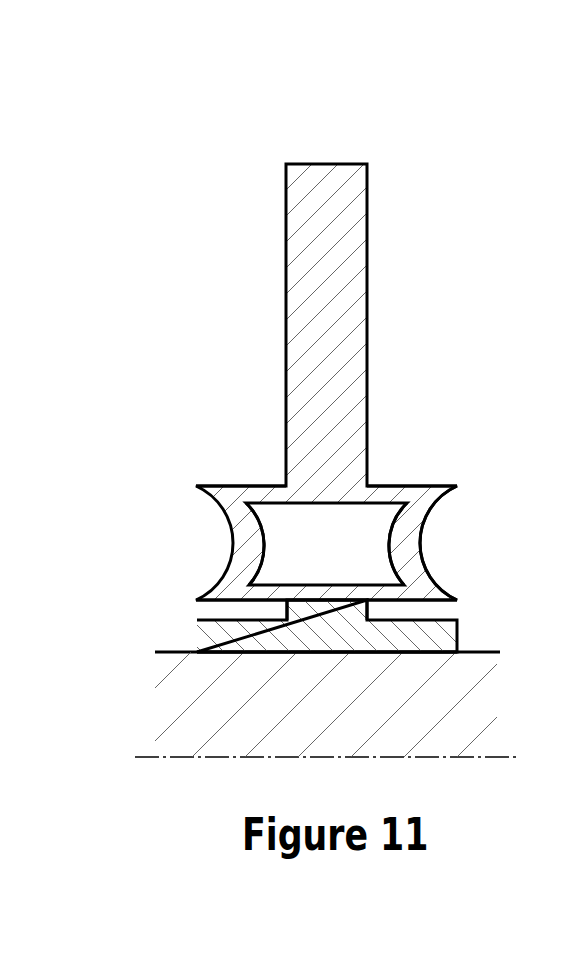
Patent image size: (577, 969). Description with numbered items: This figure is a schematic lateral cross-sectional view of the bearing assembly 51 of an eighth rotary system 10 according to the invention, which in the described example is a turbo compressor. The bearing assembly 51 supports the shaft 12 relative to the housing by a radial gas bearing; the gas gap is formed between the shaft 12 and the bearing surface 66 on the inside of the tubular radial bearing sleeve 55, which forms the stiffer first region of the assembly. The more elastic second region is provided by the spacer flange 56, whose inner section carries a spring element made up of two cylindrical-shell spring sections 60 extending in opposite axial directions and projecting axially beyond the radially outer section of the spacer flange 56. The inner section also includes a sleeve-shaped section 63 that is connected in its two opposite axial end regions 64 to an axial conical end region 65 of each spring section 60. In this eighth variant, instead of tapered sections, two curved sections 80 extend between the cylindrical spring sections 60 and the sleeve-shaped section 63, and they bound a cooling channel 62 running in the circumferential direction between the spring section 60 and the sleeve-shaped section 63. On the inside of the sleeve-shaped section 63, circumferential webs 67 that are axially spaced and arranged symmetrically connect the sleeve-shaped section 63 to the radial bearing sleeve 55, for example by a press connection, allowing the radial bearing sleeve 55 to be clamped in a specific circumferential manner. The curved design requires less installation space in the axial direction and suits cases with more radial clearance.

The rotary system 10 is at (120, 122).
The shaft 12 is at (477, 708).
The bearing assembly 51 is at (160, 433).
The radial bearing sleeve 55 is at (438, 635).
The spacer flange 56 is at (348, 327).
The spring section 60 is at (267, 492).
The cooling channel 62 is at (260, 562).
The sleeve-shaped section 63 is at (263, 592).
The axial end region 64 is at (441, 596).
The conical end region 65 is at (443, 492).
The bearing surface 66 is at (325, 653).
The web 67 is at (348, 610).
The curved section 80 is at (245, 540).